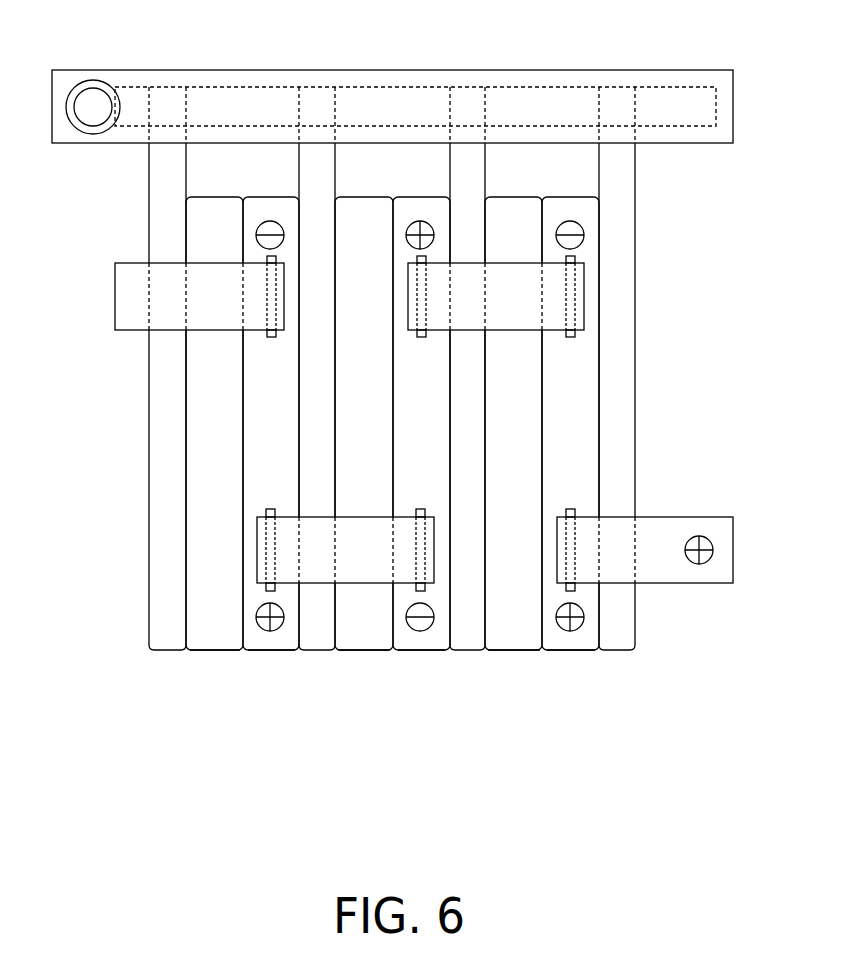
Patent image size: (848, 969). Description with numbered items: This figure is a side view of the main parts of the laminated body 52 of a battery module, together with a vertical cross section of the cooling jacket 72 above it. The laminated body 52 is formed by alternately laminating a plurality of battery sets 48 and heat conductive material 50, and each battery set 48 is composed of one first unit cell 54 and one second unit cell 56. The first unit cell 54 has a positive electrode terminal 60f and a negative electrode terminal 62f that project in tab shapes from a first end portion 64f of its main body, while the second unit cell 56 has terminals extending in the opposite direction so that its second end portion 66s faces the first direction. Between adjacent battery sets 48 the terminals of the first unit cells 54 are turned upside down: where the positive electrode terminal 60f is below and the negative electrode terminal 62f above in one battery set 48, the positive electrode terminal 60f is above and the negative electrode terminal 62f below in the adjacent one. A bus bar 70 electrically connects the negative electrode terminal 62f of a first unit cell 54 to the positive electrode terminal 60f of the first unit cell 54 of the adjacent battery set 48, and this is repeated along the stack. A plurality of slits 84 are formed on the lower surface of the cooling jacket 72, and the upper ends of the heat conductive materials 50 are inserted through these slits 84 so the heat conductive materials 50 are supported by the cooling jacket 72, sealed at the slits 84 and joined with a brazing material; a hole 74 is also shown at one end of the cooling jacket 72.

The battery set 48 is at (392, 506).
The heat conductive material 50 is at (163, 477).
The laminated body 52 is at (645, 180).
The first unit cell 54 is at (272, 653).
The second unit cell 56 is at (218, 653).
The positive electrode terminal 60f is at (421, 338).
The negative electrode terminal 62f is at (271, 338).
The first end portion 64f is at (287, 653).
The second end portion 66s is at (200, 653).
The bus bar 70 is at (113, 297).
The cooling jacket 72 is at (585, 70).
The fixing hole 74 is at (83, 82).
The slit 84 is at (486, 134).